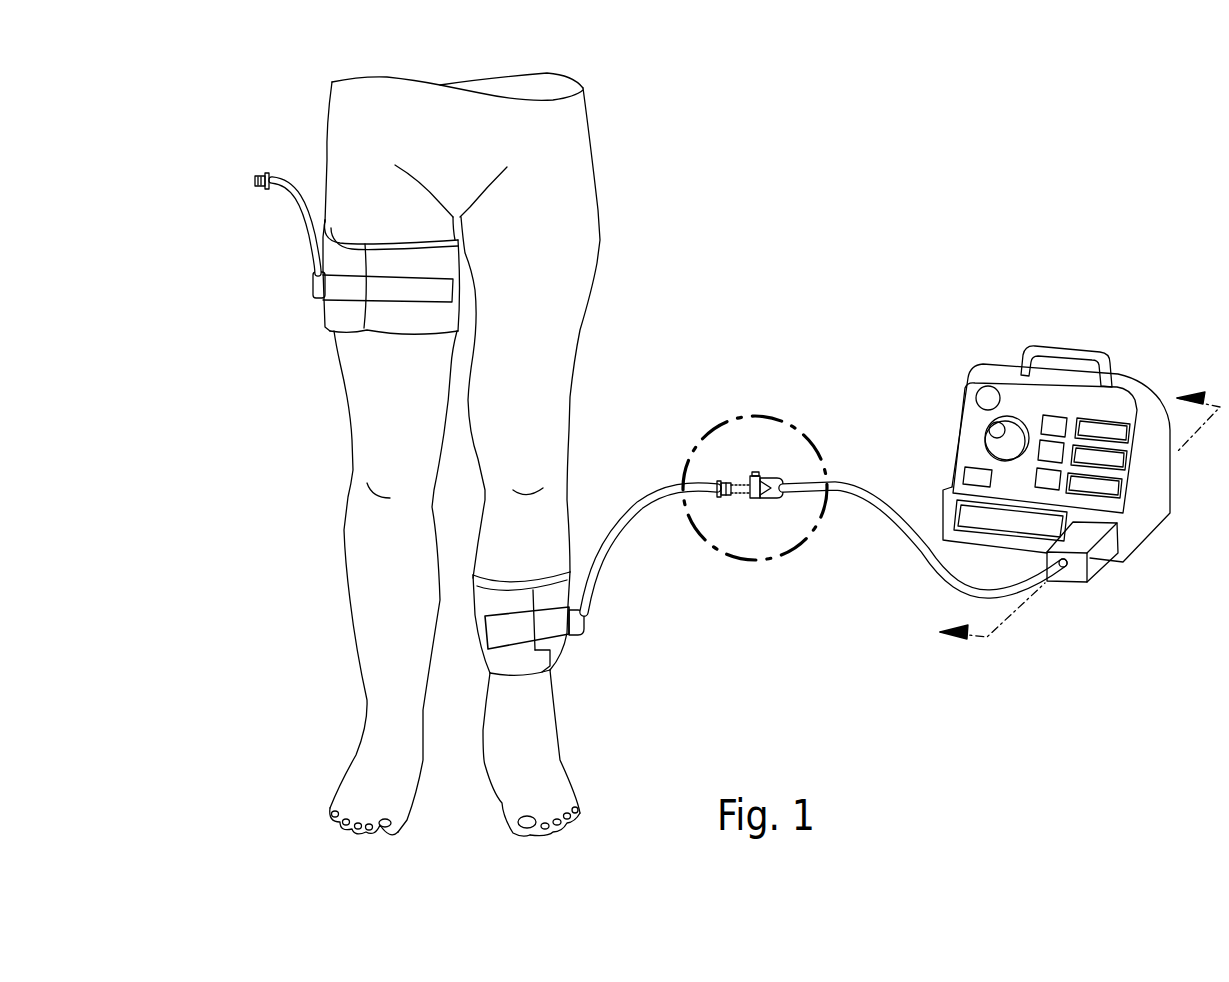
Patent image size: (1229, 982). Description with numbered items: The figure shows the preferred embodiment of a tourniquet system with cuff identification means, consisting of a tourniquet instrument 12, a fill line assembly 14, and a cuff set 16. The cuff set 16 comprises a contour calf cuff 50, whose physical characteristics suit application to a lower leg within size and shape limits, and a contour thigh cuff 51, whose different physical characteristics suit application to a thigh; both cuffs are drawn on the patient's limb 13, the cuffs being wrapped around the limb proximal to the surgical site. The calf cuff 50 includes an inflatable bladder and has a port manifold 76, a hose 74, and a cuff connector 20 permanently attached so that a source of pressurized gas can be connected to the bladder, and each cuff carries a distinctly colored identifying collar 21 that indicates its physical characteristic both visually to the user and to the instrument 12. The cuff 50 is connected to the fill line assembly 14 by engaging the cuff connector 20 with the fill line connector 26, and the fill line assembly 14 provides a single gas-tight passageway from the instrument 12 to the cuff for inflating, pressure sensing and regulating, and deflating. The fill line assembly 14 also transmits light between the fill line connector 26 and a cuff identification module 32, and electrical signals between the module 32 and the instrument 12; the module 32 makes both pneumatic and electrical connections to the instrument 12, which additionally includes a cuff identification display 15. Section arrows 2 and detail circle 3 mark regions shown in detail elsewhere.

The section view arrows 2 is at (1070, 518).
The detail view circle 3 is at (755, 497).
The tourniquet instrument 12 is at (980, 367).
The patient's limb 13 is at (547, 707).
The fill line assembly 14 is at (905, 548).
The cuff identification display 15 is at (957, 500).
The cuff set 16 is at (245, 170).
The cuff connector 20 is at (727, 482).
The identifying collar 21 is at (717, 484).
The fill line connector 26 is at (767, 477).
The cuff identification module 32 is at (1073, 570).
The contour calf cuff 50 is at (563, 663).
The contour thigh cuff 51 is at (355, 240).
The hose 74 is at (607, 540).
The port manifold 76 is at (583, 627).